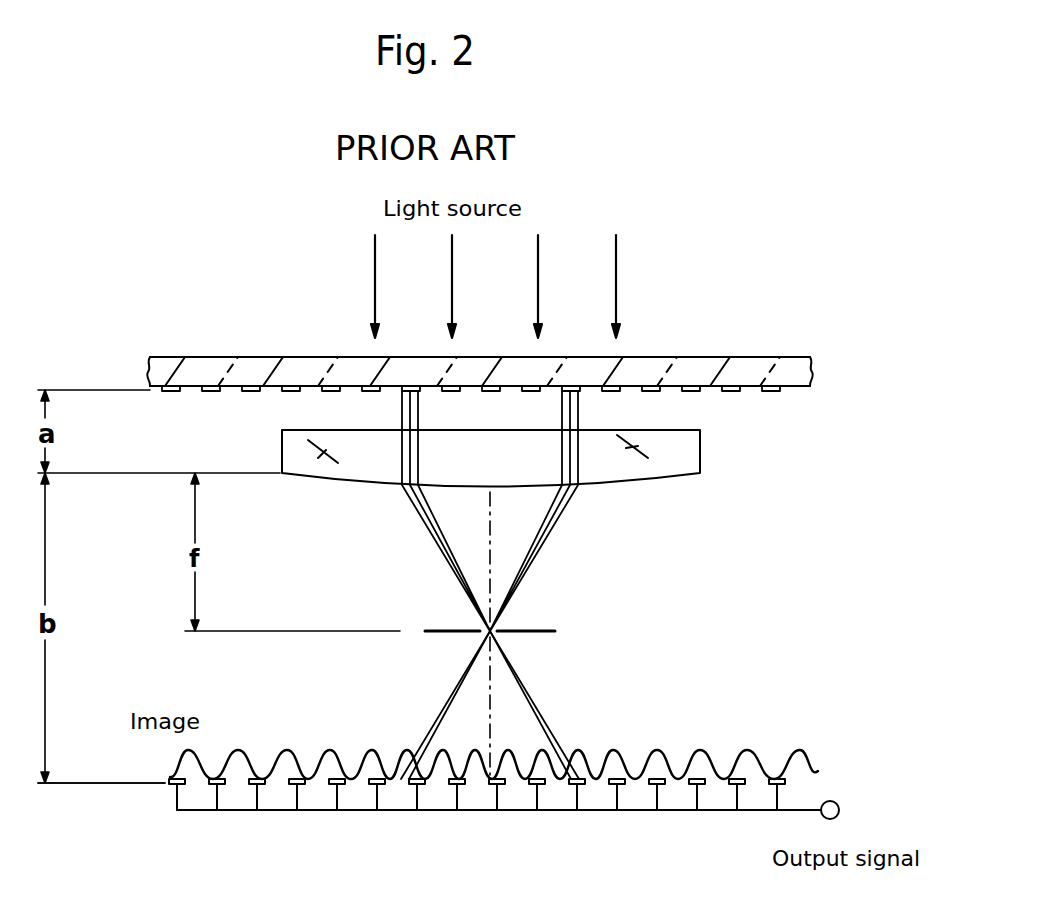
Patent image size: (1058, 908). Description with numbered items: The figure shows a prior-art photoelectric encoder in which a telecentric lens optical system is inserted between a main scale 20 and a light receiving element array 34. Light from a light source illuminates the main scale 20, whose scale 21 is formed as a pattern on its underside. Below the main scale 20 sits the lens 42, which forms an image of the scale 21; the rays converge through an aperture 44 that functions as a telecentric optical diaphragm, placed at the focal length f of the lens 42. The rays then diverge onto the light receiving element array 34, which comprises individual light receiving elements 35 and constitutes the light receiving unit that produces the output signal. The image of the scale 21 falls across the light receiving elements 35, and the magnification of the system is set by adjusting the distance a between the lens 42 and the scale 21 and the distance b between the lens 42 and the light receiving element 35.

The main scale 20 is at (702, 357).
The scale 21 is at (779, 391).
The lens 42 is at (700, 450).
The aperture 44 is at (497, 636).
The light receiving element array 34 is at (797, 773).
The light receiving element 35 is at (171, 781).